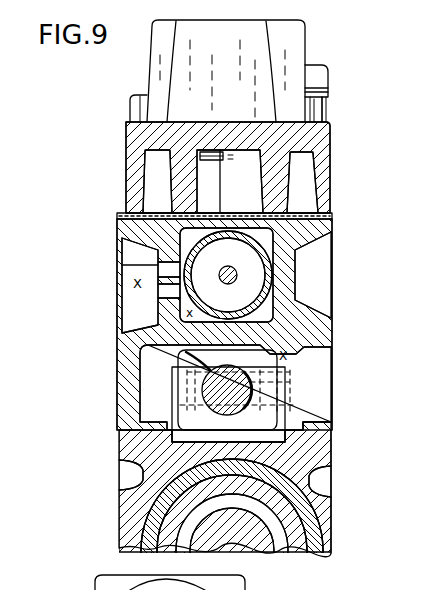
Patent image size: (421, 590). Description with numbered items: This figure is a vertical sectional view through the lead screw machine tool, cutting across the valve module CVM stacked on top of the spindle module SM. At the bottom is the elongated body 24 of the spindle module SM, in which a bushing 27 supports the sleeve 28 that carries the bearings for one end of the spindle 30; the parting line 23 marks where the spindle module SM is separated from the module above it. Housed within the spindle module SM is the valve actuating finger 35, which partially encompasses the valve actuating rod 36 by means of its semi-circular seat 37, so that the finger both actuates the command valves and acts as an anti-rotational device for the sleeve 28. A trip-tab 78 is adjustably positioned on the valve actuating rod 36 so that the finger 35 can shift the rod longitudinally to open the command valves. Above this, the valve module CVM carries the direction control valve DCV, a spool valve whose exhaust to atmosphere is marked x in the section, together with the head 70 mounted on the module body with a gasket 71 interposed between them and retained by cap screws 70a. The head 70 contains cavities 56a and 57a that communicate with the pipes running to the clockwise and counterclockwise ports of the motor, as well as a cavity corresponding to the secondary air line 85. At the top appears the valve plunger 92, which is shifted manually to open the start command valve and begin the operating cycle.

The cap screws 70a is at (133, 107).
The valve plunger 92 is at (325, 68).
The head 70 is at (127, 143).
The cavity 57a is at (150, 183).
The gasket 71 is at (254, 192).
The secondary line 85 is at (253, 178).
The cavity 56a is at (305, 198).
The direction control valve DCV is at (253, 285).
The spindle module SM is at (333, 453).
The valve actuating finger 35 is at (153, 408).
The valve module CVM is at (271, 395).
The semi-circular seat 37 is at (178, 386).
The valve actuating rod 36 is at (188, 360).
The trip-tab 78 is at (320, 390).
The elongated body 24 is at (227, 506).
The parting line 23 is at (120, 447).
The bushing 27 is at (232, 524).
The sleeve 28 is at (232, 542).
The spindle 30 is at (232, 549).